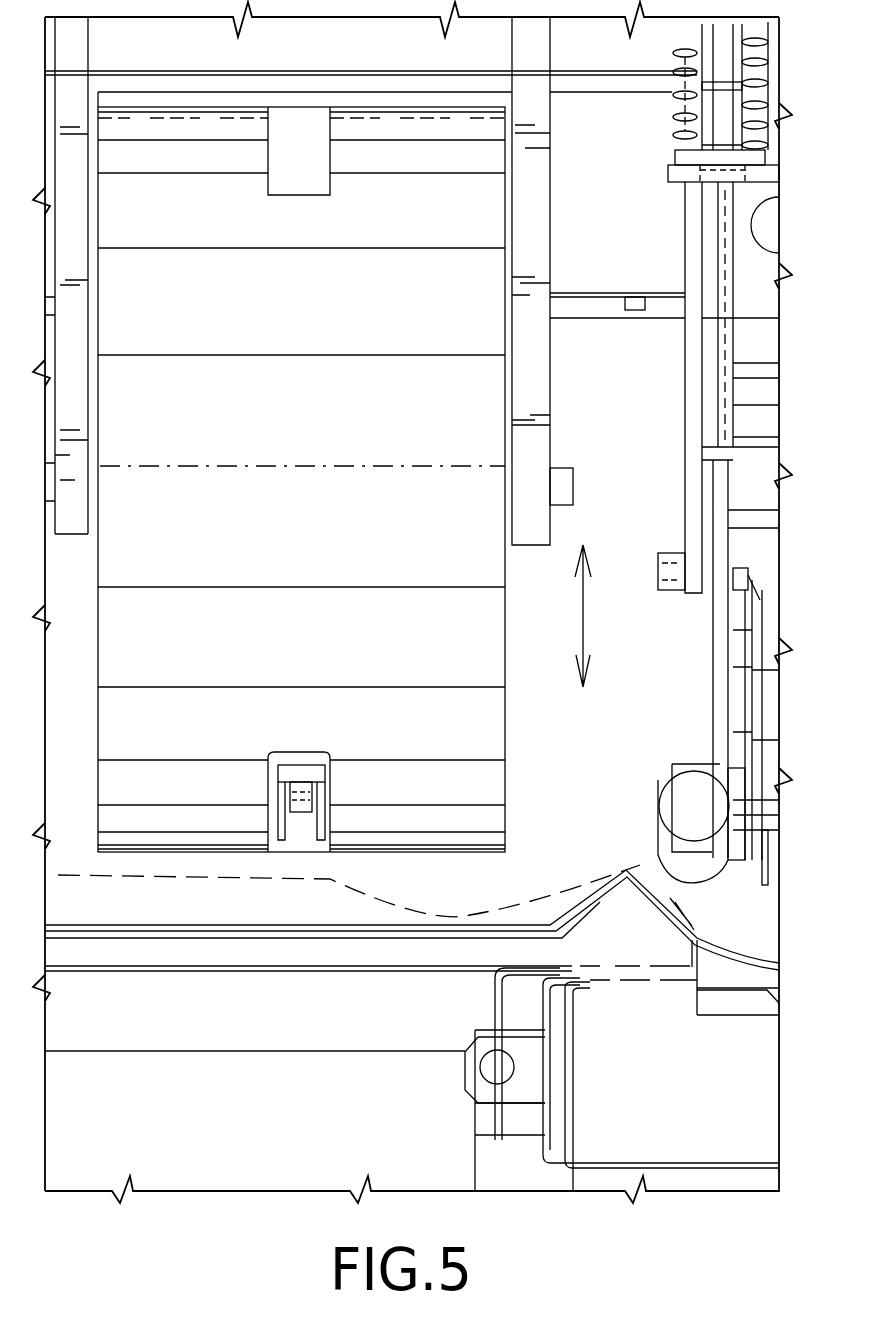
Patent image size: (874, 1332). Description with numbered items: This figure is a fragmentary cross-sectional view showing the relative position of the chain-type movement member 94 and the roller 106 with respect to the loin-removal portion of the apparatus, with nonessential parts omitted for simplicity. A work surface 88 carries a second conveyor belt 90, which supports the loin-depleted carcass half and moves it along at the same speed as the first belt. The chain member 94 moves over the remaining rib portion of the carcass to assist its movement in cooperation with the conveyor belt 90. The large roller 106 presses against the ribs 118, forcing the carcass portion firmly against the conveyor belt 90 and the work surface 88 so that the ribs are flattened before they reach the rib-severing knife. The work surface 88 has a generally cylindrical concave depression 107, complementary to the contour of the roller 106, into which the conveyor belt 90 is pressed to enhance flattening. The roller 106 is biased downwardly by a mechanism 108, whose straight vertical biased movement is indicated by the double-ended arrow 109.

The work surface 88 is at (325, 972).
The second conveyor belt 90 is at (198, 924).
The chain-type movement member 94 is at (360, 837).
The roller 106 is at (313, 434).
The concave depression 107 is at (345, 1055).
The biasing mechanism 108 is at (550, 200).
The double-ended arrow 109 is at (585, 618).
The ribs 118 is at (628, 845).